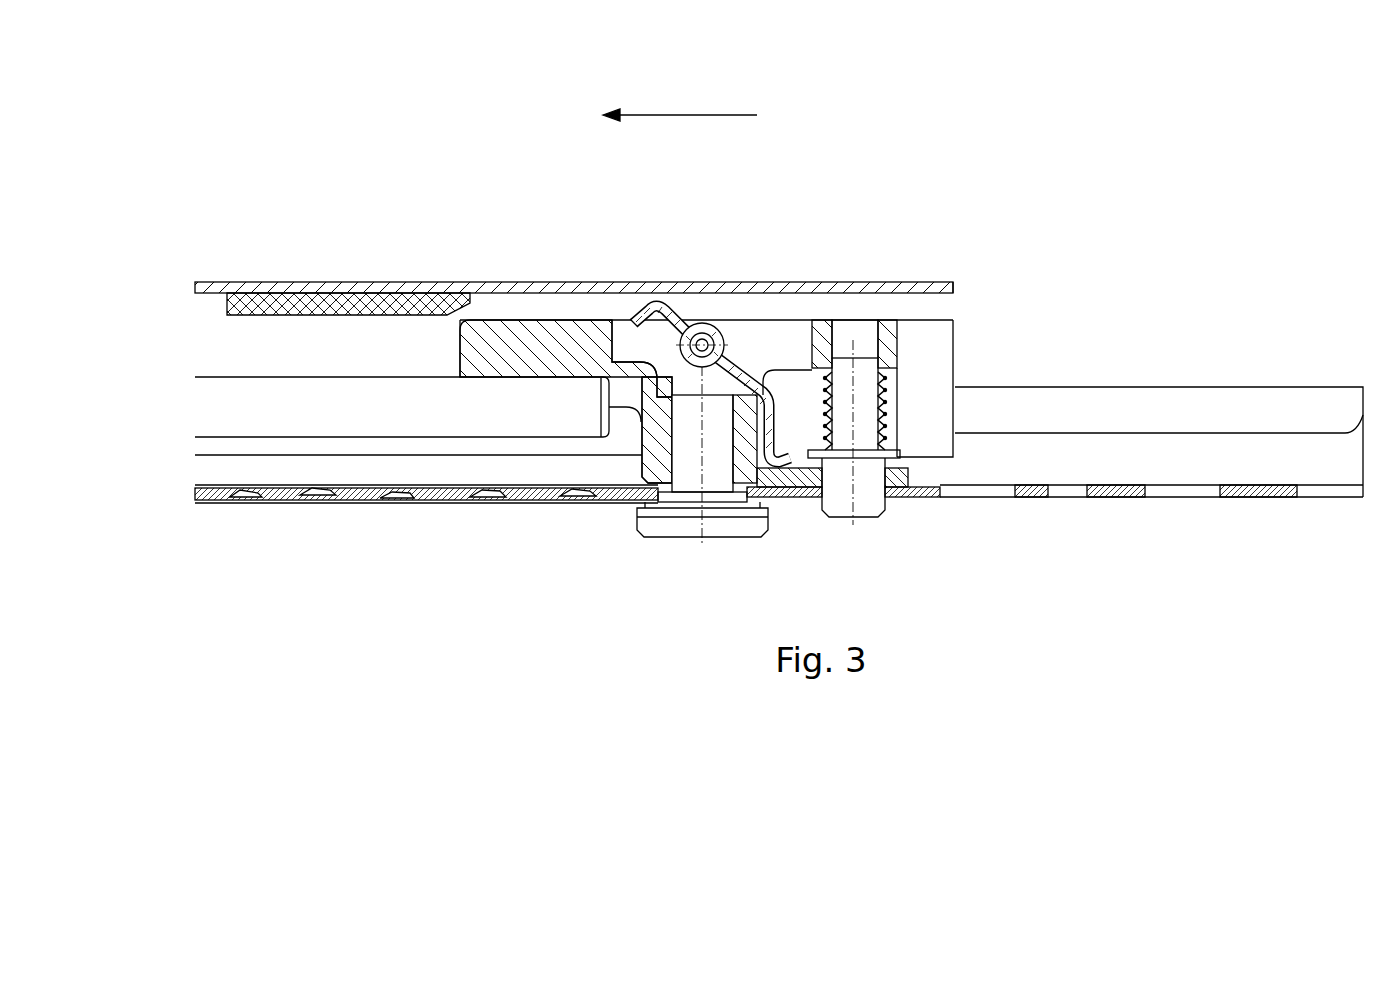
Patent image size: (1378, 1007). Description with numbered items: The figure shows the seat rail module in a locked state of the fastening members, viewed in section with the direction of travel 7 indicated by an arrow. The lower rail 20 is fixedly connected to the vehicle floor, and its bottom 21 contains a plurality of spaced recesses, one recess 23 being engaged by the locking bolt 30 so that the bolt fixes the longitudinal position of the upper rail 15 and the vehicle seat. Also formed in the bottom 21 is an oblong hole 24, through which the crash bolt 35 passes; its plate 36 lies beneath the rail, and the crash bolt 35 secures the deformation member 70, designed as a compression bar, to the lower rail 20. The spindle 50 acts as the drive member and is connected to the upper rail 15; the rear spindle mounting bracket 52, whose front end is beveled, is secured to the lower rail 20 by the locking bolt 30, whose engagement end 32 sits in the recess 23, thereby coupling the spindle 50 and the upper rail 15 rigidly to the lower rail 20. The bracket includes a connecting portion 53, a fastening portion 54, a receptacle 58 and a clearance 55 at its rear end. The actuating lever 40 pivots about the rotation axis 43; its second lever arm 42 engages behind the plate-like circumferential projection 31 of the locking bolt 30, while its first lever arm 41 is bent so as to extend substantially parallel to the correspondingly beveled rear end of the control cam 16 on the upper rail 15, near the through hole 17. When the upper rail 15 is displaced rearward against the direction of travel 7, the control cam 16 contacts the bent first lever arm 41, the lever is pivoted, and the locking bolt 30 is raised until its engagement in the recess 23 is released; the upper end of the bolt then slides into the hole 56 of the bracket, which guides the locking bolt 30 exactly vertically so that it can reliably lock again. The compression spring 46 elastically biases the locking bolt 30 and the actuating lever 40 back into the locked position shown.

The direction of travel 7 is at (674, 113).
The upper rail 15 is at (528, 283).
The control cam 16 is at (352, 297).
The through hole 17 is at (864, 287).
The lower rail 20 is at (1313, 405).
The bottom of lower rail 21 is at (1250, 497).
The recess 23 is at (990, 497).
The oblong hole 24 is at (262, 490).
The locking bolt 30 is at (863, 437).
The projection 31 is at (892, 455).
The engagement end of locking bolt 32 is at (863, 500).
The crash bolt 35 is at (680, 462).
The plate of crash bolt 36 is at (690, 520).
The actuating lever 40 is at (738, 380).
The first lever arm of actuating lever 41 is at (663, 308).
The second lever arm of actuating lever 42 is at (783, 462).
The rotation axis 43 is at (710, 338).
The compression spring 46 is at (887, 412).
The spindle 50 is at (218, 385).
The rear spindle mounting bracket 52 is at (650, 447).
The connecting portion 53 is at (588, 323).
The fastening portion 54 is at (800, 482).
The clearance 55 is at (898, 385).
The hole 56 is at (862, 335).
The receptacle 58 is at (790, 330).
The deformation member 70 is at (384, 500).